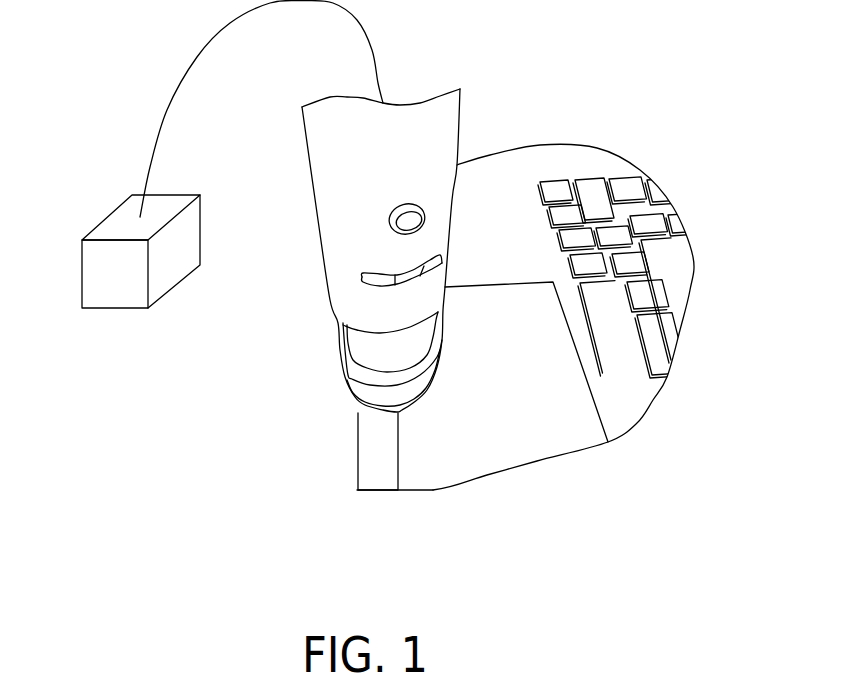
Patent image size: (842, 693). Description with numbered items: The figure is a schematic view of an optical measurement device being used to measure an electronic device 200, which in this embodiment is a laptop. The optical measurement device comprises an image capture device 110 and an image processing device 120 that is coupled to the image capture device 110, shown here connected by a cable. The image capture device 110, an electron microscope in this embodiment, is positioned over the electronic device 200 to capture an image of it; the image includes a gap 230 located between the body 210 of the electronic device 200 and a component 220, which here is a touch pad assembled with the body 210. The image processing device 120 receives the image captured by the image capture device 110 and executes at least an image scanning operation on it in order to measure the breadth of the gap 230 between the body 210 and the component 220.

The image capture device 110 is at (453, 106).
The image processing device 120 is at (195, 242).
The electronic device 200 is at (375, 487).
The body 210 is at (365, 462).
The component 220 is at (513, 427).
The gap 230 is at (405, 518).